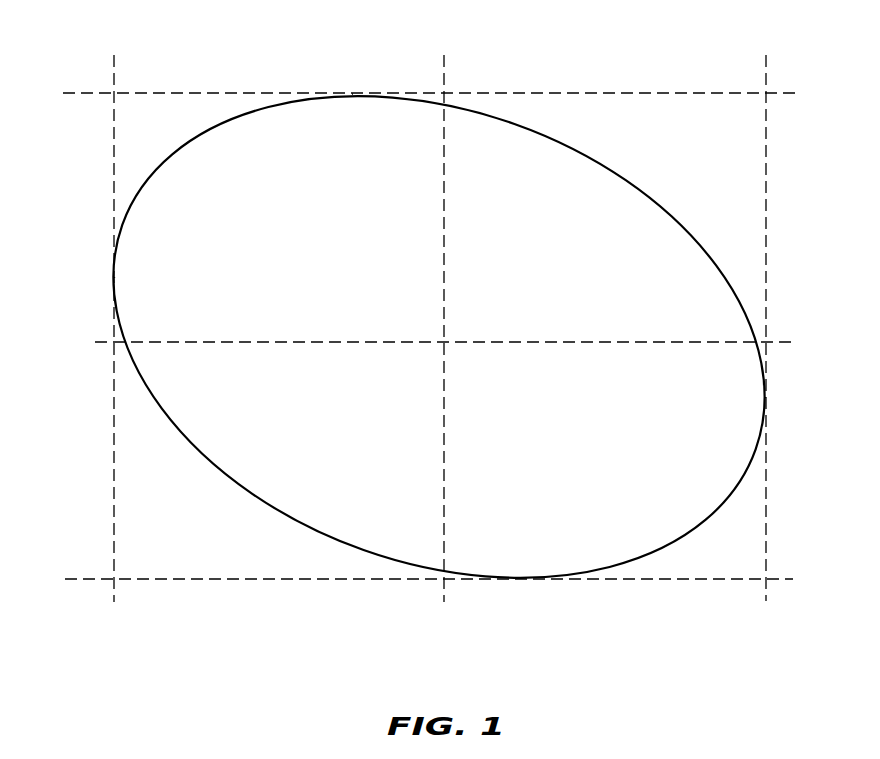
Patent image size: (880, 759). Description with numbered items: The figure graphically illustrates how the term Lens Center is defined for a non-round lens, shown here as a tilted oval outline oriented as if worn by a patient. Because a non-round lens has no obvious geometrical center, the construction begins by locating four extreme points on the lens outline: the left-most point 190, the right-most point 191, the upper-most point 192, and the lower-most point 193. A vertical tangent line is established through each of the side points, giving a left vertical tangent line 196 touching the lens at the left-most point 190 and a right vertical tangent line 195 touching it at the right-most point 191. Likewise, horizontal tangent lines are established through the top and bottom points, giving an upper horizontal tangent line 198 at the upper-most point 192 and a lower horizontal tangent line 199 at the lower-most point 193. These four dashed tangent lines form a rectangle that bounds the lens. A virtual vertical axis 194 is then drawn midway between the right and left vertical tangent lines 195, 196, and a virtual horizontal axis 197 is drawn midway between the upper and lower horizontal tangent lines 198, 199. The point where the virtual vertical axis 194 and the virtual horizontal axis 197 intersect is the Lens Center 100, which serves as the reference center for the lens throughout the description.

The Lens Center 100 is at (443, 341).
The left-most point 190 is at (114, 270).
The right-most point 191 is at (767, 398).
The upper-most point 192 is at (350, 92).
The lower-most point 193 is at (525, 582).
The virtual vertical axis 194 is at (446, 219).
The right vertical tangent line 195 is at (768, 197).
The left vertical tangent line 196 is at (114, 200).
The virtual horizontal axis 197 is at (614, 342).
The upper horizontal tangent line 198 is at (542, 92).
The lower horizontal tangent line 199 is at (245, 581).